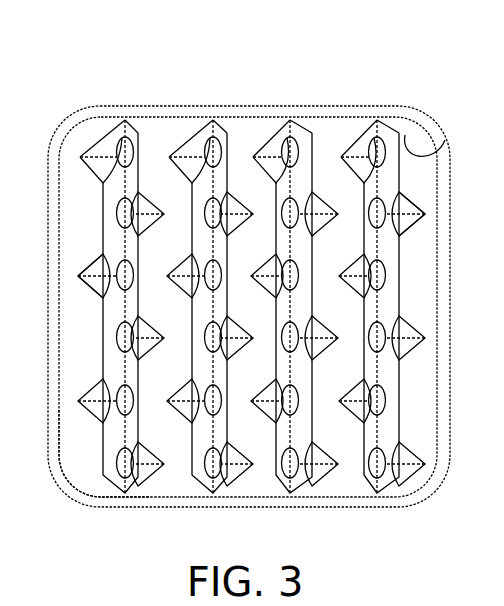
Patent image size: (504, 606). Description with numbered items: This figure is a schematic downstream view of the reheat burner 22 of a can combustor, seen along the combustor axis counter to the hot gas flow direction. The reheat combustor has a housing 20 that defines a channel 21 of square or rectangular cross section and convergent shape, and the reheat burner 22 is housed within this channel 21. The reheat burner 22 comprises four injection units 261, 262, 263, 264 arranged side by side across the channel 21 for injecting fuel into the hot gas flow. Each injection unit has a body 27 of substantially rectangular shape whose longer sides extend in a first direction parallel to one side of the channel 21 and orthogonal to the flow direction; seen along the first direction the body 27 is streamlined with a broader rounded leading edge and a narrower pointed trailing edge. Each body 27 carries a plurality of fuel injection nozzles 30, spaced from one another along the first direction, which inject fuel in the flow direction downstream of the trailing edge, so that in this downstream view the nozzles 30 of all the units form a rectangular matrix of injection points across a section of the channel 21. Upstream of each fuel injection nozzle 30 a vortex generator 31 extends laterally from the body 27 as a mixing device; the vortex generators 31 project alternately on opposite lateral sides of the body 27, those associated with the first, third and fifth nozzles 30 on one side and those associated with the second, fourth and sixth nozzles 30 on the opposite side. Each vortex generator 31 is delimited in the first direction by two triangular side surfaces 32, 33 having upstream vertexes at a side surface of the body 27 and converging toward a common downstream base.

The housing 20 is at (352, 105).
The channel 21 is at (445, 140).
The reheat burner 22 is at (84, 445).
The body 27 is at (107, 363).
The fuel injection nozzle 30 is at (116, 162).
The vortex generator 31 is at (80, 146).
The triangular side surface 32 is at (92, 260).
The triangular side surface 33 is at (92, 296).
The injection unit 261 is at (140, 113).
The injection unit 262 is at (228, 113).
The injection unit 263 is at (303, 113).
The injection unit 264 is at (390, 111).